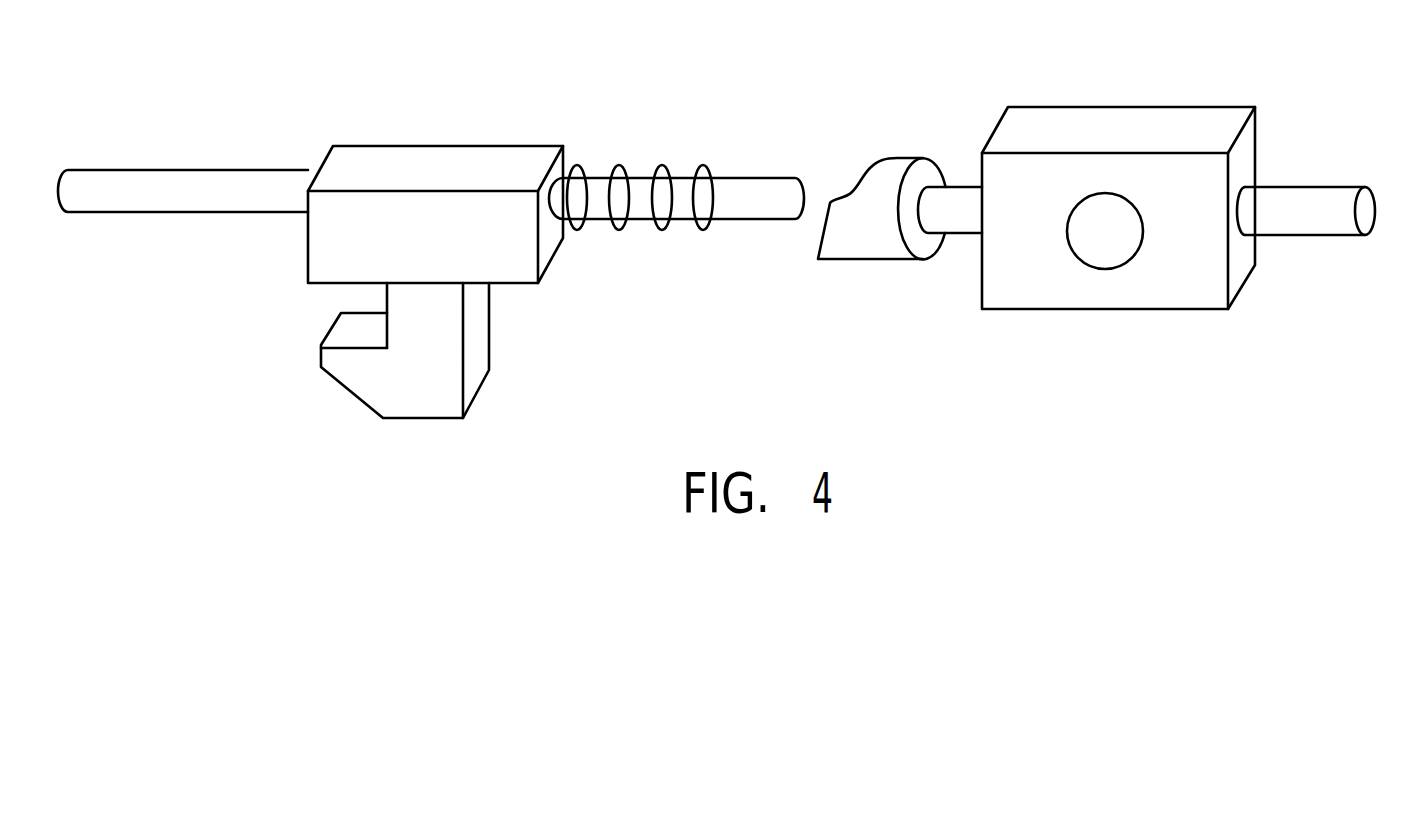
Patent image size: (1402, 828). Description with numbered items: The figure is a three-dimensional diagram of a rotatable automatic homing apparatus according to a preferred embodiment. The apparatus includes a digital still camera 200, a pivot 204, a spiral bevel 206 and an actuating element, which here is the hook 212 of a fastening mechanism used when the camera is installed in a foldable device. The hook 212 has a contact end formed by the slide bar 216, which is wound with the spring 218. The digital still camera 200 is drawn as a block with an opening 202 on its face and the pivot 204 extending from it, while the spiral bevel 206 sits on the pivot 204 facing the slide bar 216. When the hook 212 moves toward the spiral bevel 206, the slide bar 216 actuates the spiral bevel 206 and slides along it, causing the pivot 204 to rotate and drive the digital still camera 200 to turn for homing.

The digital still camera 200 is at (1125, 108).
The hole 202 is at (1108, 269).
The pivot 204 is at (962, 187).
The spiral bevel 206 is at (850, 197).
The hook 212 is at (335, 380).
The slide bar 216 is at (780, 220).
The spring 218 is at (622, 165).